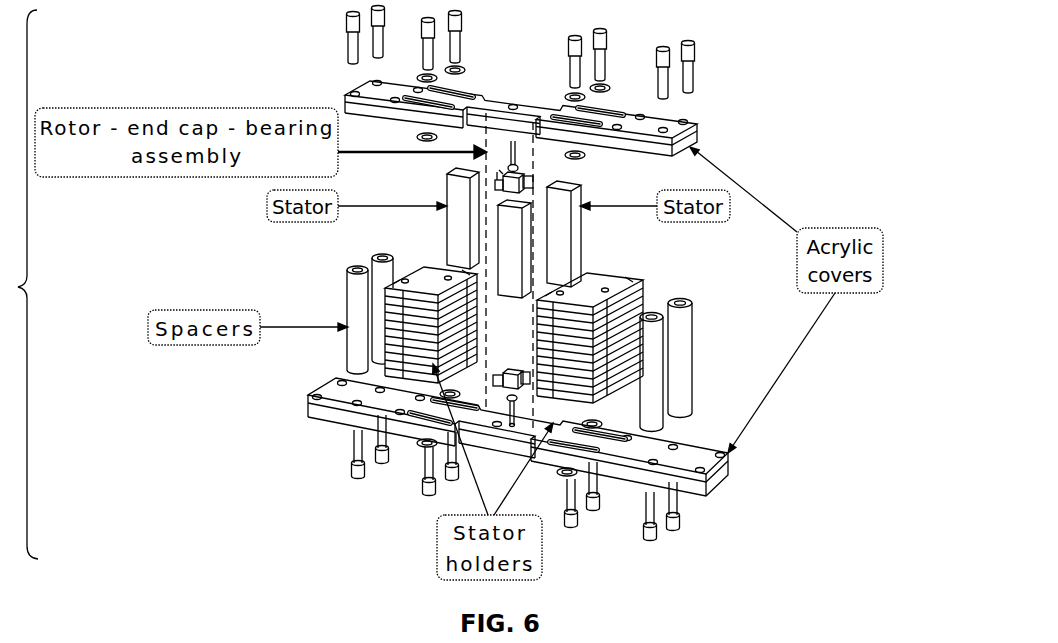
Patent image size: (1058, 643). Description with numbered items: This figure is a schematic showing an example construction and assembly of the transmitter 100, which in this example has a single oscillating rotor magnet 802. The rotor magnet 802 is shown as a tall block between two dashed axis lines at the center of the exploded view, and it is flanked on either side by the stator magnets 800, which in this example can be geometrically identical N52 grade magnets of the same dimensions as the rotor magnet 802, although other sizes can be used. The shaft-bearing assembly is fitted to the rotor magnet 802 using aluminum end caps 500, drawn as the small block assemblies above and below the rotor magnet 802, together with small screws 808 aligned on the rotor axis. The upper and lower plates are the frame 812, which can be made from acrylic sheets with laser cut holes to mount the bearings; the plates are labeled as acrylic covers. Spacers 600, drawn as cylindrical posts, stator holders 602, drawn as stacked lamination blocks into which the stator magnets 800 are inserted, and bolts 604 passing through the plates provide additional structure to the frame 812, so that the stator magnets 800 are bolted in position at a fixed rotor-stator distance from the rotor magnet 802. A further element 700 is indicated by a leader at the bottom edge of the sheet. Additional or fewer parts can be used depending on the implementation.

The transmitter 100 is at (805, 38).
The aluminum end cap 500 is at (497, 188).
The spacers 600 is at (182, 385).
The stator holders 602 is at (547, 577).
The bolts 604 is at (714, 34).
The controller 700 is at (763, 639).
The stator magnets 800 is at (453, 247).
The rotor magnet 802 is at (527, 290).
The screw 808 is at (526, 156).
The frame 812 is at (693, 125).